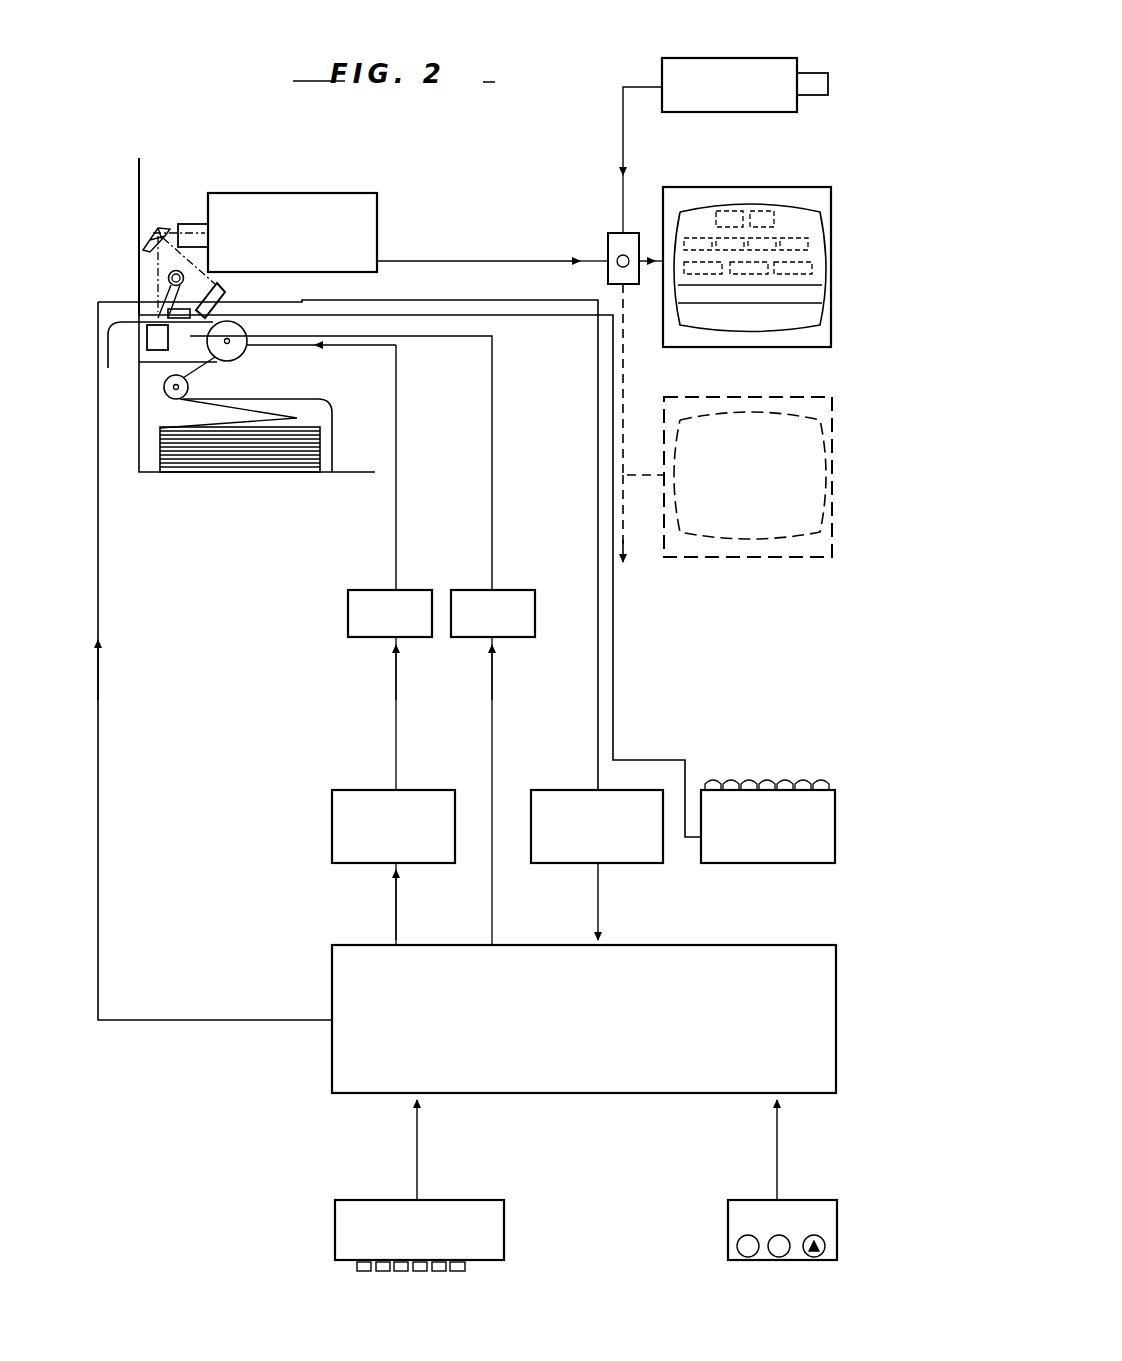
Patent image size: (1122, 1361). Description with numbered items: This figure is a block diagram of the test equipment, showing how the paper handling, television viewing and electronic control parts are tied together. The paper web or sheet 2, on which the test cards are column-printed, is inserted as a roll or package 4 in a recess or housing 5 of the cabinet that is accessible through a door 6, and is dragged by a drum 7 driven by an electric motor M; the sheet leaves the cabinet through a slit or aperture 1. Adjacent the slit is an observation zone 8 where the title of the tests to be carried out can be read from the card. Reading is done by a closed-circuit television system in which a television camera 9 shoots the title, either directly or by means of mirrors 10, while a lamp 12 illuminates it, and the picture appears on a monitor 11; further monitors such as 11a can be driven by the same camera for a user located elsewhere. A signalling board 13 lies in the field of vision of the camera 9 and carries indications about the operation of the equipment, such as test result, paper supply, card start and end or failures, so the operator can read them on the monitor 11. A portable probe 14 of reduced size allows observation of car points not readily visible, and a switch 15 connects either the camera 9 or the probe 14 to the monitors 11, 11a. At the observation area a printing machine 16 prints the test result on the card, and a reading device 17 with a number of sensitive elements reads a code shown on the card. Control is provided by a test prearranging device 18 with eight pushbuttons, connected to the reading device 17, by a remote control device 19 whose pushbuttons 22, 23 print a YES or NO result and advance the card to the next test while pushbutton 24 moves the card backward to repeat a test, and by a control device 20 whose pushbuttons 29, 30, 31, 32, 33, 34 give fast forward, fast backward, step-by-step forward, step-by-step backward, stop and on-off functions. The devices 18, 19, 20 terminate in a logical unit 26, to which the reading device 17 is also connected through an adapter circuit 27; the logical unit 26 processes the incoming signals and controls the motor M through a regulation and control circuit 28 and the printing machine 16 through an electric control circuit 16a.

The slit or aperture 1 is at (150, 320).
The paper web or sheet 2 is at (100, 362).
The roll or package 4 is at (228, 455).
The recess or housing 5 is at (308, 408).
The door 6 is at (139, 424).
The drum 7 is at (240, 360).
The observation zone 8 is at (165, 320).
The television camera 9 is at (292, 193).
The mirrors 10 is at (152, 232).
The monitor 11 is at (745, 187).
The further monitor 11a is at (708, 558).
The lamp 12 is at (183, 276).
The signalling board 13 is at (225, 297).
The portable probe 14 is at (730, 58).
The switch 15 is at (608, 245).
The printing machine 16 is at (150, 355).
The electric control circuit 16a is at (520, 590).
The reading device 17 is at (183, 320).
The test prearranging device 18 is at (732, 863).
The remote control device 19 is at (800, 1200).
The control device 20 is at (466, 1200).
The pushbutton 22 is at (742, 1258).
The pushbutton 23 is at (778, 1258).
The control pushbutton 24 is at (812, 1258).
The logical unit 26 is at (584, 1019).
The adapter circuit 27 is at (581, 865).
The regulation and control circuit 28 is at (332, 830).
The pushbutton 29 is at (360, 1273).
The pushbutton 30 is at (385, 1273).
The pushbutton 31 is at (400, 1273).
The pushbutton 32 is at (420, 1273).
The pushbutton 33 is at (440, 1273).
The pushbutton 34 is at (460, 1273).
The electric motor M is at (428, 572).